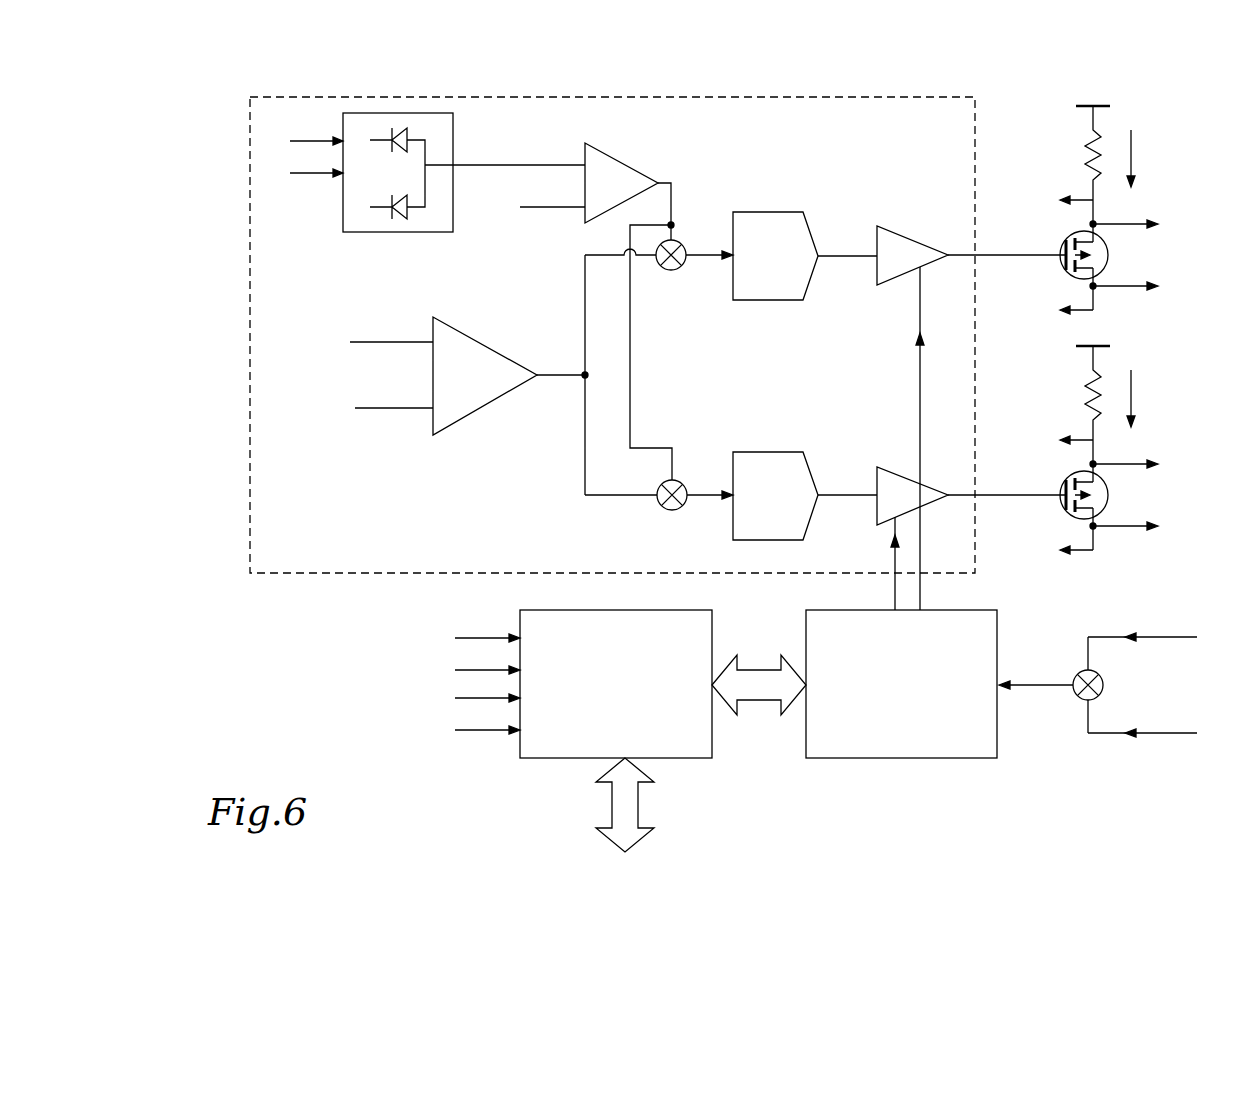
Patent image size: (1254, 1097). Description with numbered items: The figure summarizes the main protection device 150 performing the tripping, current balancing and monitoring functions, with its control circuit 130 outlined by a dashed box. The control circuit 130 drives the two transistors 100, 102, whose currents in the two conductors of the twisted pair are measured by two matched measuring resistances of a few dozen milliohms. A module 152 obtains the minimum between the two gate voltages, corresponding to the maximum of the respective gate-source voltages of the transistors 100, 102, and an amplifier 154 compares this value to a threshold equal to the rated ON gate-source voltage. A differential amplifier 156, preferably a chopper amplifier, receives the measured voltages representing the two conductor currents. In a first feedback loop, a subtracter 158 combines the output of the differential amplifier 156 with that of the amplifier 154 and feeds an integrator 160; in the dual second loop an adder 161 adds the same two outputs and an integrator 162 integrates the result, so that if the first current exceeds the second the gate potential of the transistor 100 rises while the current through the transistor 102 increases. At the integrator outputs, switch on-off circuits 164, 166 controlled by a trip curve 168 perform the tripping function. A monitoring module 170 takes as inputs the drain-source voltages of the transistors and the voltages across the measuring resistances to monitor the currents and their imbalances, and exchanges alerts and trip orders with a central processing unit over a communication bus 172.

The transistor 100 is at (1128, 255).
The transistor 102 is at (1128, 497).
The control circuit 130 is at (840, 97).
The main protection device 150 is at (198, 127).
The module 152 is at (353, 232).
The amplifier 154 is at (625, 177).
The differential amplifier 156 is at (497, 352).
The subtracter 158 is at (672, 272).
The integrator 160 is at (768, 212).
The adder 161 is at (672, 511).
The integrator 162 is at (760, 452).
The switch on-off circuit 164 is at (900, 228).
The switch on-off circuit 166 is at (900, 467).
The trip curve 168 is at (935, 758).
The monitoring module 170 is at (608, 610).
The communication bus 172 is at (632, 812).